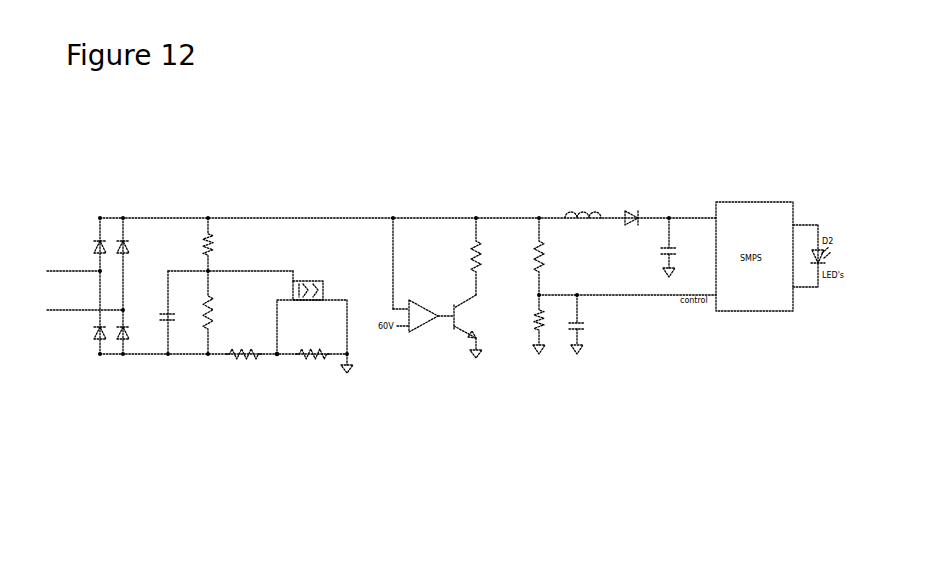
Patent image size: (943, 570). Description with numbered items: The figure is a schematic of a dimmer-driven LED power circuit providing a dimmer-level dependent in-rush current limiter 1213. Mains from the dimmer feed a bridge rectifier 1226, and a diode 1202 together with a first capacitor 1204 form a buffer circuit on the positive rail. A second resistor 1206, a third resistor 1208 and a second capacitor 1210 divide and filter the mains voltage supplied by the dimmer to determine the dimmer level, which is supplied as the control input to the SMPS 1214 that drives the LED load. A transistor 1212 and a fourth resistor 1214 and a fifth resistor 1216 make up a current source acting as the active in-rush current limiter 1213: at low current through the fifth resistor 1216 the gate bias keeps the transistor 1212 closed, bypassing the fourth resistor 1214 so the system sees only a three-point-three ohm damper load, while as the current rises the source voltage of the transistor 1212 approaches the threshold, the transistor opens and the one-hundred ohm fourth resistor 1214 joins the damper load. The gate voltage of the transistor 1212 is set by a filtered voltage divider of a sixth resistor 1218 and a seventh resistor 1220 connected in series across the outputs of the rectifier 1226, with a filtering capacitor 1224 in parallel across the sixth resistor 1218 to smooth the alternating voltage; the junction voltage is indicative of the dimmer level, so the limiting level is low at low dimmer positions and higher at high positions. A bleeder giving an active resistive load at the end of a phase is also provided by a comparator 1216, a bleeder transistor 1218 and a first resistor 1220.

The diode D1 1202 is at (626, 218).
The capacitor C1 1204 is at (662, 245).
The resistor R2 1206 is at (538, 245).
The resistor R3 1208 is at (541, 340).
The capacitor C2 1210 is at (580, 335).
The transistor M1 1212 is at (316, 280).
The in-rush current limiter 1213 is at (277, 390).
The SMPS 1214 is at (37, 332).
The resistor R5 1216 is at (232, 356).
The resistor R6 1218 is at (208, 297).
The resistor R7 1220 is at (203, 240).
The filtering capacitor C3 1224 is at (165, 315).
The rectifier 1226 is at (80, 212).